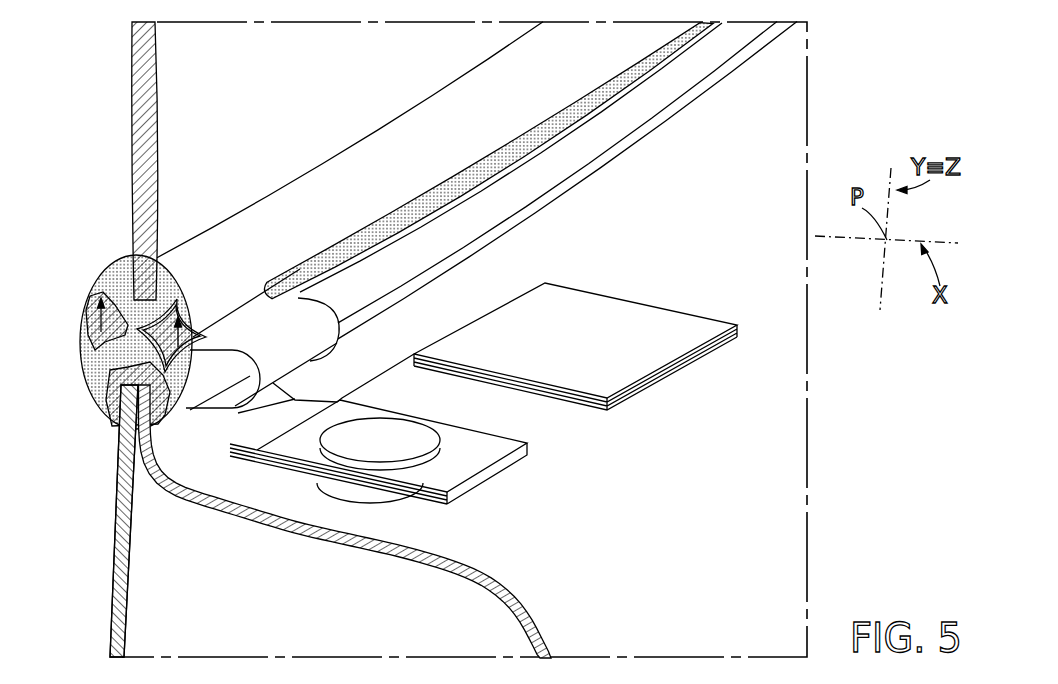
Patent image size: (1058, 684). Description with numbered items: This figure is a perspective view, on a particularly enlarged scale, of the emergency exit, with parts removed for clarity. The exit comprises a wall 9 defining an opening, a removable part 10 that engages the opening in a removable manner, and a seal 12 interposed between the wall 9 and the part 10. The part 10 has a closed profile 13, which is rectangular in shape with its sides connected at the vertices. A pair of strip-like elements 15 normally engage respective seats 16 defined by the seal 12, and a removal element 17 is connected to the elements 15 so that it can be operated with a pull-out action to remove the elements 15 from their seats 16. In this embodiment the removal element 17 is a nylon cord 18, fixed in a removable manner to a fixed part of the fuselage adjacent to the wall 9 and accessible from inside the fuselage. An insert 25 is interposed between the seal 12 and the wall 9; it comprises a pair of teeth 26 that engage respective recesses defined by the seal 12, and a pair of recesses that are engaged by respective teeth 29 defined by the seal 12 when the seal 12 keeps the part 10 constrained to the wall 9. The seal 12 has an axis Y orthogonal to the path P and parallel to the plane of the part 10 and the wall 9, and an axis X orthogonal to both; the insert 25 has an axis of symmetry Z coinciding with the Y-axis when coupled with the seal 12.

The wall 9 is at (117, 530).
The removable part 10 is at (147, 117).
The seal 12 is at (163, 280).
The closed profile 13 is at (130, 152).
The strip-like elements 15 is at (86, 320).
The seats 16 is at (95, 352).
The removal element 17 is at (650, 285).
The nylon cord 18 is at (397, 445).
The insert 25 is at (110, 447).
The teeth 26 is at (92, 376).
The teeth 29 is at (112, 373).